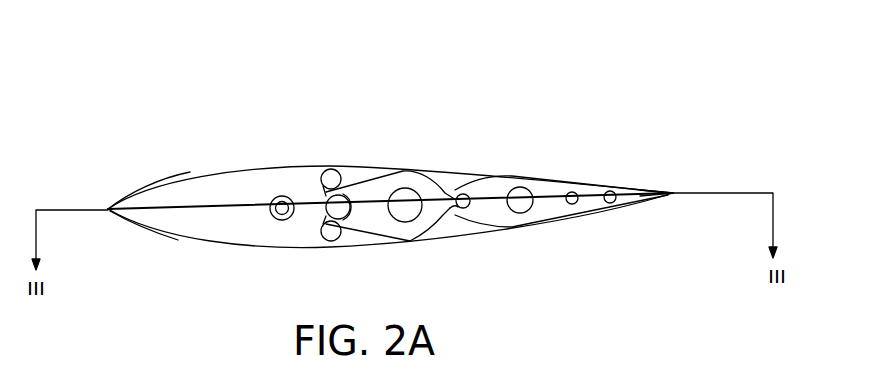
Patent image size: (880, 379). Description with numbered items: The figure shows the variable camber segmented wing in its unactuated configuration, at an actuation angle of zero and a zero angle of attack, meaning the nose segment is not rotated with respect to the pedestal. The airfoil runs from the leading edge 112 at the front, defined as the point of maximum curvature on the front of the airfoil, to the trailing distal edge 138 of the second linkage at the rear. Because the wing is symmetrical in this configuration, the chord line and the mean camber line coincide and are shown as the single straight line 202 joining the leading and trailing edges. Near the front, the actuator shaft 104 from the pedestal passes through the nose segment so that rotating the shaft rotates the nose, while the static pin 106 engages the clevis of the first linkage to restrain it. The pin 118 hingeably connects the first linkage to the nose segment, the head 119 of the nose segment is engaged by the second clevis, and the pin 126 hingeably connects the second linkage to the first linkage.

The leading edge 112 is at (108, 208).
The line 202 is at (210, 207).
The actuator shaft 104 is at (282, 205).
The static pin 106 is at (338, 205).
The pin 118 is at (405, 204).
The head 119 is at (463, 200).
The pin 126 is at (508, 177).
The trailing distal edge 138 is at (673, 193).